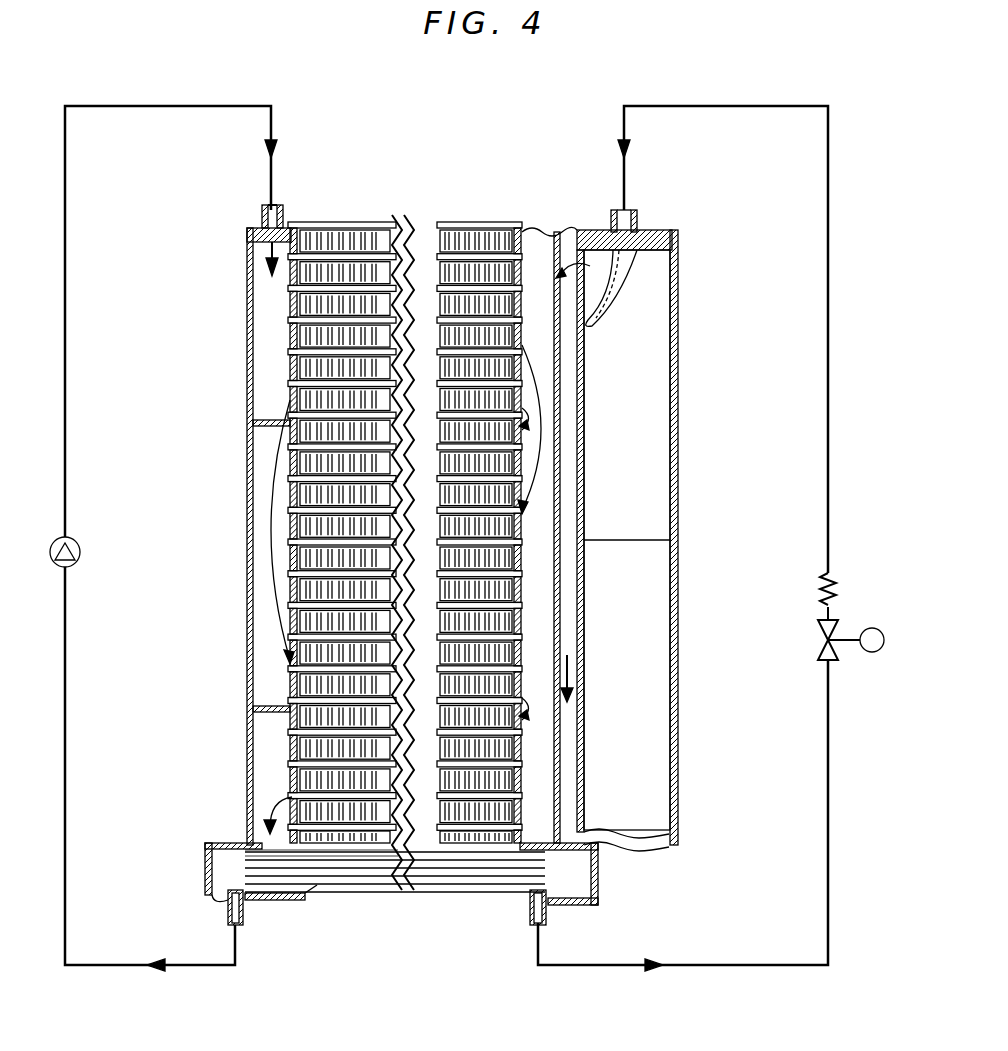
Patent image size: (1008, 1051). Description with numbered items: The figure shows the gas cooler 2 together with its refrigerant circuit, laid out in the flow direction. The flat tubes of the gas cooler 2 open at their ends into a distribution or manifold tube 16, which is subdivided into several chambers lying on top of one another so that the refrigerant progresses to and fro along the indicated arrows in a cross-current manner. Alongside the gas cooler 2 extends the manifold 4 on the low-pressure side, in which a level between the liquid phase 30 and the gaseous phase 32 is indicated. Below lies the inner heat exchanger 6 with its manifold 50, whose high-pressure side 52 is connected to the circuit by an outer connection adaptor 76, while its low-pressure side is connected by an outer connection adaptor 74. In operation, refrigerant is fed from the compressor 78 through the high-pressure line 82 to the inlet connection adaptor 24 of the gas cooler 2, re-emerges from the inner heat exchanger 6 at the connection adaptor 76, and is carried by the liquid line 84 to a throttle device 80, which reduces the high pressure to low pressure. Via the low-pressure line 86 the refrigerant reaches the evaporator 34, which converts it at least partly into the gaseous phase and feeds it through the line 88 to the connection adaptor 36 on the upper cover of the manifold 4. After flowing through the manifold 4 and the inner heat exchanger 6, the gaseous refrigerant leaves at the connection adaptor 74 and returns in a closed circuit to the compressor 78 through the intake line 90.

The gas cooler 2 is at (398, 214).
The manifold on the low-pressure side 4 is at (686, 608).
The inner heat exchanger 6 is at (365, 902).
The distribution or manifold tube 16 is at (236, 336).
The circumferential-side connection adaptor 24 is at (284, 210).
The liquid phase 30 is at (627, 645).
The gaseous phase 32 is at (627, 480).
The evaporator 34 is at (828, 585).
The connection adaptor 36 is at (640, 215).
The manifold 50 is at (207, 836).
The high-pressure side 52 is at (265, 897).
The outer connection adaptor 74 is at (232, 920).
The outer connection adaptor 76 is at (546, 920).
The compressor 78 is at (80, 551).
The throttle device 80 is at (836, 660).
The high-pressure line 82 is at (66, 222).
The liquid line 84 is at (700, 967).
The low-pressure line 86 is at (828, 615).
The line on the low-pressure side 88 is at (828, 218).
The intake line 90 is at (66, 690).